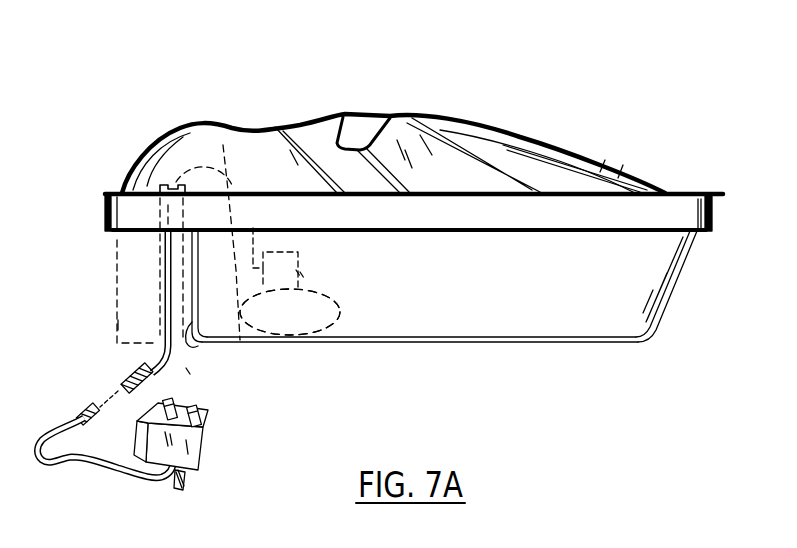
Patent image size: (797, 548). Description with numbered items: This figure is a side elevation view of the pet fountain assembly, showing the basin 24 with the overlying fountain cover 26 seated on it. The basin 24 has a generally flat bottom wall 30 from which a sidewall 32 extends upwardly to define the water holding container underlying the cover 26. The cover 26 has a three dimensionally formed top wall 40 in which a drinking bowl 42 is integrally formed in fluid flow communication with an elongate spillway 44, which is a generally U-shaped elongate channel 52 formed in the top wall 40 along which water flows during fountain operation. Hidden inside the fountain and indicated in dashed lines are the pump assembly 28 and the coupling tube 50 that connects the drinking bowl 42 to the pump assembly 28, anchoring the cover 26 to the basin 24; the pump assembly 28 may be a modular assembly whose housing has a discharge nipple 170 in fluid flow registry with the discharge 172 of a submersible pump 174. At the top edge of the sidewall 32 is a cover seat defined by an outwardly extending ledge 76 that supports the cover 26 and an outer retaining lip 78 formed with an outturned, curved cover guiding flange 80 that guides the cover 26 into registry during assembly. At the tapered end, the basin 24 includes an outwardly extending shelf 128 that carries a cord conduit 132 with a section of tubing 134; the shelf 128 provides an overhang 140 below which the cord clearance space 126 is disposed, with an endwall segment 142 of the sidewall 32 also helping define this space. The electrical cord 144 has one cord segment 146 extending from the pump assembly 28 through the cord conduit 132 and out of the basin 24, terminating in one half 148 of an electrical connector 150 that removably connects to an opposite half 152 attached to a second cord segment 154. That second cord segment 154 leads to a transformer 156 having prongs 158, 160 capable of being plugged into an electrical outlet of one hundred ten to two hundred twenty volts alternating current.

The basin 24 is at (476, 330).
The fountain cover 26 is at (393, 107).
The pump assembly 28 is at (341, 314).
The bottom wall 30 is at (544, 352).
The sidewall 32 is at (694, 291).
The top wall 40 is at (580, 160).
The drinking bowl 42 is at (339, 140).
The spillway 44 is at (414, 110).
The coupling tube 50 is at (300, 249).
The elongate channel 52 is at (428, 152).
The ledge 76 is at (708, 233).
The outer retaining lip 78 is at (714, 216).
The cover guiding flange 80 is at (396, 206).
The cord clearance space 126 is at (112, 323).
The shelf 128 is at (117, 233).
The cord conduit 132 is at (165, 184).
The section of tubing 134 is at (160, 187).
The overhang 140 is at (98, 256).
The endwall segment 142 is at (198, 346).
The electrical cord 144 is at (198, 372).
The cord segment 146 is at (164, 285).
The connector half 148 is at (128, 370).
The electrical connector 150 is at (72, 411).
The opposite connector half 152 is at (86, 406).
The second cord segment 154 is at (97, 466).
The transformer 156 is at (221, 466).
The prong 158 is at (205, 415).
The prong 160 is at (200, 396).
The discharge nipple 170 is at (300, 275).
The discharge 172 is at (371, 267).
The pump 174 is at (361, 312).